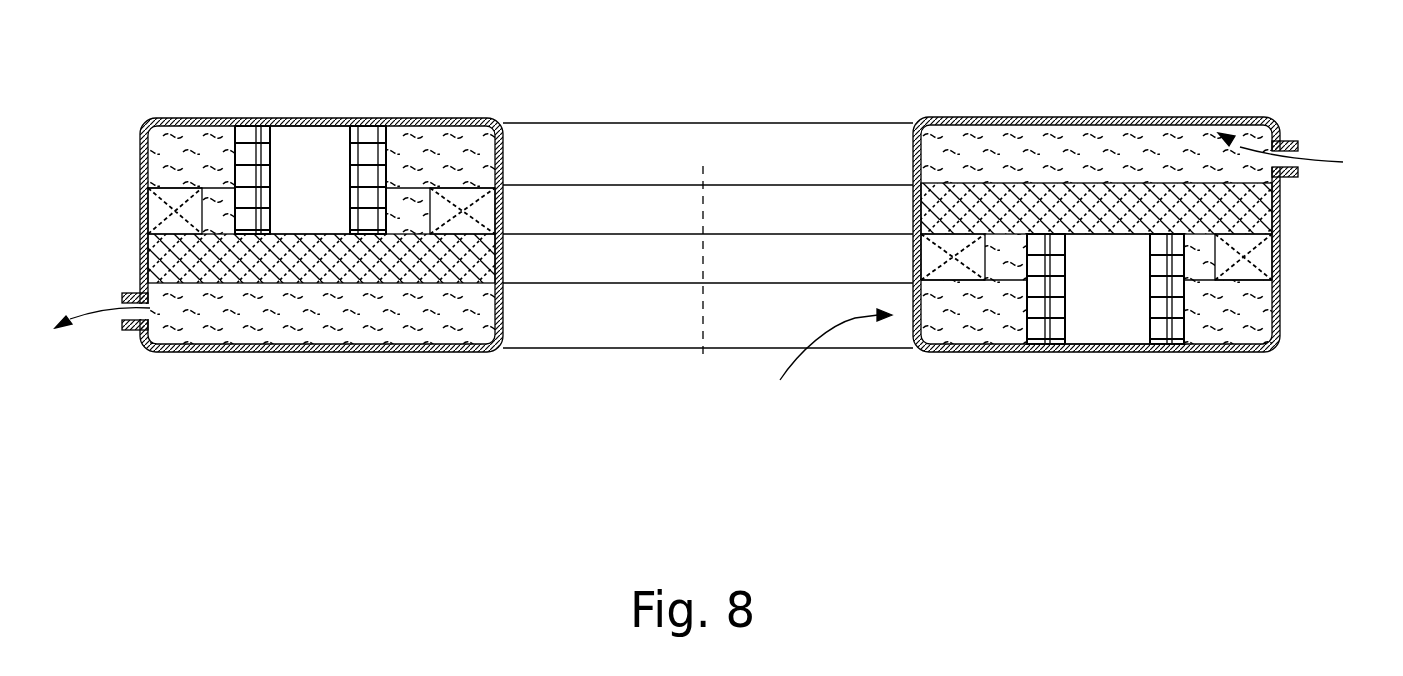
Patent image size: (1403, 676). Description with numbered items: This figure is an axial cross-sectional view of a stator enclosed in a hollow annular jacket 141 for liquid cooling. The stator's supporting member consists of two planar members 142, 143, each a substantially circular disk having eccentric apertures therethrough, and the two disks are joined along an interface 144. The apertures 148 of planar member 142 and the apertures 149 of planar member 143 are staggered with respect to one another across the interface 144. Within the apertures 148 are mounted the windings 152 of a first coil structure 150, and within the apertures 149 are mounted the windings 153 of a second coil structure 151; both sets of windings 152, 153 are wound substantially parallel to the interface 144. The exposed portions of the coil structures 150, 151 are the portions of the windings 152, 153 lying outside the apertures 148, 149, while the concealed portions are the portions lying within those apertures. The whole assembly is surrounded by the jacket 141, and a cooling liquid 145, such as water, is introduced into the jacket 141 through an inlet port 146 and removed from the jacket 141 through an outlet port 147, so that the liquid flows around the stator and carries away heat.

The supporting member / hollow annular jacket 141 is at (988, 118).
The planar member 142 is at (1282, 212).
The planar member 143 is at (1280, 268).
The interface 144 is at (717, 233).
The cooling liquid 145 is at (1108, 148).
The inlet port 146 is at (1288, 142).
The outlet port 147 is at (130, 333).
The apertures 148 is at (408, 200).
The apertures 149 is at (1202, 270).
The first coil structure 150 is at (512, 150).
The second coil structure 151 is at (821, 365).
The windings 152 is at (338, 191).
The windings 153 is at (1135, 297).